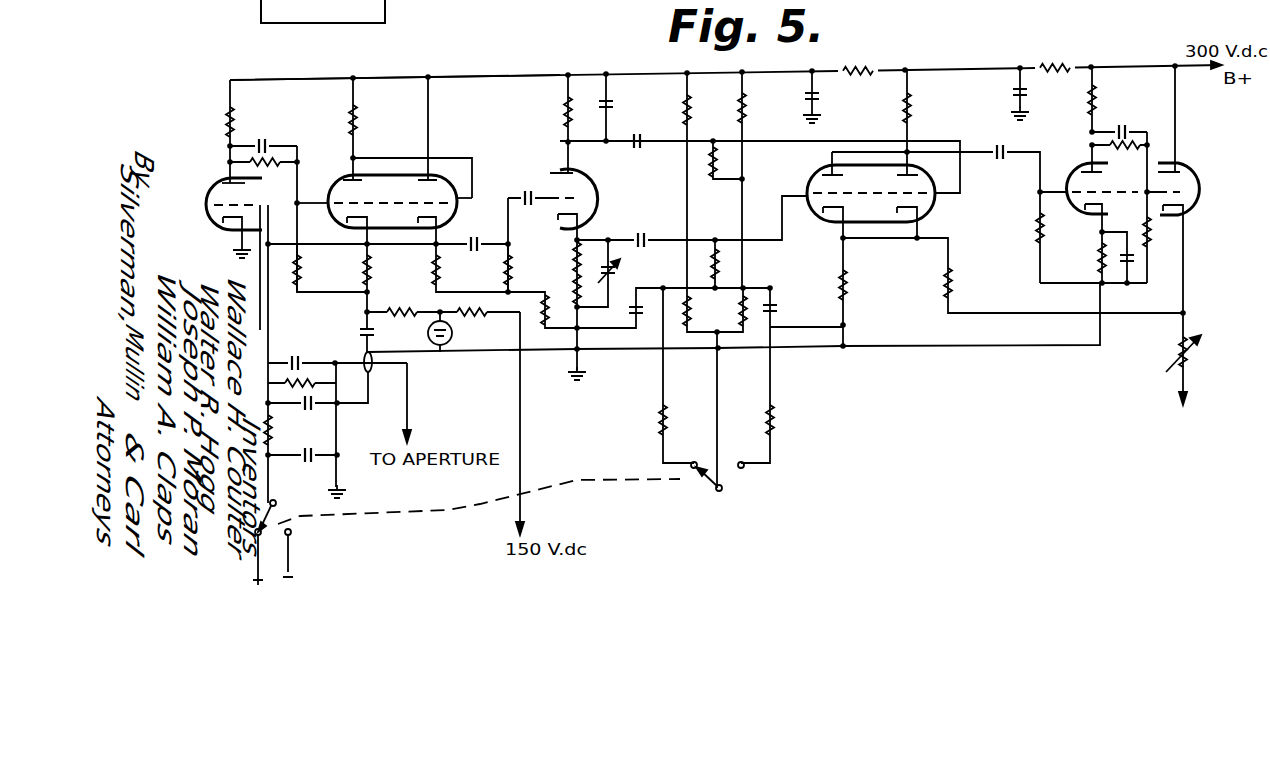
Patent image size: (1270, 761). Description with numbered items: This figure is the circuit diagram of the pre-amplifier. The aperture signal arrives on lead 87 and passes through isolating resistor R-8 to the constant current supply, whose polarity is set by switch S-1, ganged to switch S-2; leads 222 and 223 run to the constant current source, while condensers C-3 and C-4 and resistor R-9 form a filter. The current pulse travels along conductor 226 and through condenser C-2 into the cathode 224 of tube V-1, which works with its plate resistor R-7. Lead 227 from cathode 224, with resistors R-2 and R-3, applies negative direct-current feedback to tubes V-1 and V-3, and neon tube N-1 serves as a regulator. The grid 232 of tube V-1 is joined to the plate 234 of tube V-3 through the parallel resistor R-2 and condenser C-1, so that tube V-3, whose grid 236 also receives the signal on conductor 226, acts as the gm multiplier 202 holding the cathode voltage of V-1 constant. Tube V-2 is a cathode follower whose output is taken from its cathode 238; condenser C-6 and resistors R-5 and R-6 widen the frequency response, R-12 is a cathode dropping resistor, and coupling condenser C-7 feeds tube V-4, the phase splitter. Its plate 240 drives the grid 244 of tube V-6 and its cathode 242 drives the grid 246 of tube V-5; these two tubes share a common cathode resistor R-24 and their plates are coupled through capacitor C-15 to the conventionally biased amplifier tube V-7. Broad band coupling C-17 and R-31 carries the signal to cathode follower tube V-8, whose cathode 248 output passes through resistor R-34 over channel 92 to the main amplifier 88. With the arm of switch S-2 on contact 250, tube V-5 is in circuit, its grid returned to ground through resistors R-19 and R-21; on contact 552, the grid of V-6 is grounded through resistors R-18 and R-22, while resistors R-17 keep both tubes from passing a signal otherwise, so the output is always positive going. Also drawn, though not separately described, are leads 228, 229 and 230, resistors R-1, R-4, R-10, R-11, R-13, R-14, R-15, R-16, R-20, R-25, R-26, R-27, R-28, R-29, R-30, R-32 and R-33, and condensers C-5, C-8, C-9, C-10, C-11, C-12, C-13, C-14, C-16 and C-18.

The gm multiplier 202 is at (365, 23).
The supply bus line 228 is at (468, 78).
The connection to grid of V-2 229 is at (462, 192).
The plate lead of V-1 230 is at (390, 160).
The grid 232 is at (338, 183).
The plate 234 is at (240, 186).
The grid 236 is at (240, 267).
The conductor 226 is at (252, 354).
The cathode 224 is at (345, 236).
The lead 227 is at (300, 258).
The cathode 238 is at (428, 243).
The plate 240 is at (740, 162).
The cathode 242 is at (565, 232).
The grid 244 is at (962, 185).
The grid 246 is at (776, 204).
The cathode 248 is at (1185, 222).
The switch contact 250 is at (683, 478).
The switch contact 552 is at (744, 467).
The lead 222 is at (260, 553).
The lead 223 is at (291, 541).
The lead 87 is at (410, 420).
The main amplifier 88 is at (1188, 444).
The channel 92 is at (1185, 388).
The tube V-1 is at (338, 178).
The cathode follower tube V-2 is at (447, 180).
The tube V-3 is at (214, 192).
The phase splitter tube V-4 is at (605, 180).
The switching tube V-5 is at (812, 170).
The switching tube V-6 is at (930, 218).
The amplifier tube V-7 is at (1073, 175).
The cathode follower tube V-8 is at (1200, 165).
The resistor R-1 is at (235, 125).
The resistor R-2 is at (240, 162).
The resistor R-3 is at (330, 268).
The resistor R-4 is at (371, 262).
The resistor R-5 is at (432, 280).
The resistor R-6 is at (489, 268).
The plate resistor R-7 is at (357, 123).
The isolating resistor R-8 is at (286, 378).
The resistor R-9 is at (256, 430).
The resistor R-10 is at (403, 303).
The resistor R-11 is at (480, 302).
The cathode dropping resistor R-12 is at (540, 318).
The resistor R-13 is at (559, 273).
The resistor R-14 is at (573, 290).
The resistor R-15 is at (562, 120).
The resistor R-16 is at (671, 184).
The resistors R-17 is at (715, 310).
The resistor R-18 is at (716, 152).
The resistor R-19 is at (712, 254).
The resistor R-20 is at (725, 180).
The resistor R-21 is at (668, 428).
The resistor R-22 is at (750, 420).
The cathode resistor R-24 is at (848, 280).
The resistor R-25 is at (943, 290).
The resistor R-26 is at (858, 60).
The resistor R-27 is at (1052, 57).
The resistor R-28 is at (1097, 100).
The resistor R-29 is at (1036, 233).
The resistor R-30 is at (1098, 250).
The resistor R-31 is at (1128, 150).
The resistor R-32 is at (911, 112).
The resistor R-33 is at (1143, 230).
The resistor R-34 is at (1188, 355).
The condenser C-1 is at (264, 139).
The condenser C-2 is at (302, 352).
The filter condenser C-3 is at (315, 410).
The condenser C-4 is at (315, 462).
The capacitor C-5 is at (352, 330).
The condenser C-6 is at (474, 236).
The coupling condenser C-7 is at (528, 182).
The capacitor C-8 is at (610, 100).
The capacitor C-9 is at (645, 128).
The capacitor C-10 is at (637, 230).
The variable capacitor C-11 is at (617, 273).
The capacitor C-12 is at (645, 312).
The capacitor C-13 is at (820, 96).
The capacitor C-14 is at (1013, 90).
The capacitor C-15 is at (1002, 144).
The capacitor C-16 is at (775, 302).
The coupling condenser C-17 is at (1128, 118).
The capacitor C-18 is at (1132, 262).
The neon tube N-1 is at (428, 333).
The switch S-1 is at (282, 519).
The switch S-2 is at (722, 492).